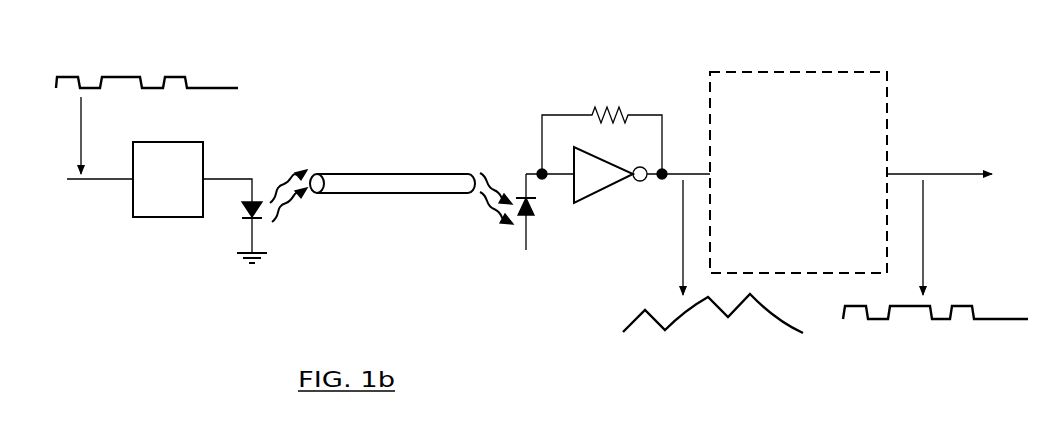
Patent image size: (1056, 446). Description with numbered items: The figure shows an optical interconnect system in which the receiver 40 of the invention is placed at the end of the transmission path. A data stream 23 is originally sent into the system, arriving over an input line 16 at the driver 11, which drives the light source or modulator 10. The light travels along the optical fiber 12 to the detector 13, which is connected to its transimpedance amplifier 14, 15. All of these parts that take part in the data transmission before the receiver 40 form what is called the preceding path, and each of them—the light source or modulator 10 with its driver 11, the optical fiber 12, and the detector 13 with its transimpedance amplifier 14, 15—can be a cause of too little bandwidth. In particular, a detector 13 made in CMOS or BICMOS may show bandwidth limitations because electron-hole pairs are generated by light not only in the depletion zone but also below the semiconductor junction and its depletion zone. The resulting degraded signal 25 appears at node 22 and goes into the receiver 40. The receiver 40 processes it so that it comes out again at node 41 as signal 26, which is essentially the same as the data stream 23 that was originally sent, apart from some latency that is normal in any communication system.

The light source or modulator 10 is at (236, 208).
The driver 11 is at (156, 218).
The optical fiber 12 is at (393, 194).
The detector 13 is at (538, 200).
The transimpedance amplifier 14 is at (615, 178).
The transimpedance amplifier feedback element 15 is at (612, 105).
The input signal line 16 is at (106, 181).
The node 22 is at (683, 172).
The data stream 23 is at (176, 78).
The signal 25 is at (626, 323).
The signal 26 is at (990, 318).
The receiver 40 is at (745, 72).
The node 41 is at (912, 172).